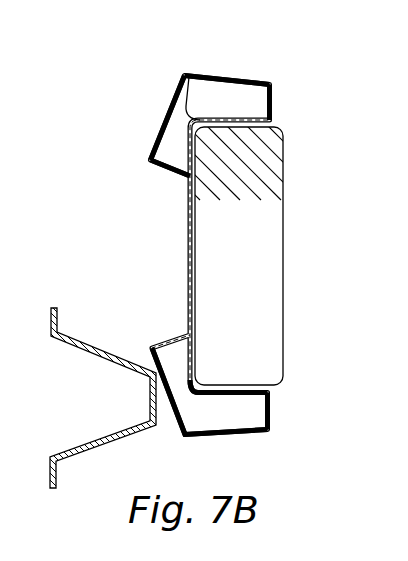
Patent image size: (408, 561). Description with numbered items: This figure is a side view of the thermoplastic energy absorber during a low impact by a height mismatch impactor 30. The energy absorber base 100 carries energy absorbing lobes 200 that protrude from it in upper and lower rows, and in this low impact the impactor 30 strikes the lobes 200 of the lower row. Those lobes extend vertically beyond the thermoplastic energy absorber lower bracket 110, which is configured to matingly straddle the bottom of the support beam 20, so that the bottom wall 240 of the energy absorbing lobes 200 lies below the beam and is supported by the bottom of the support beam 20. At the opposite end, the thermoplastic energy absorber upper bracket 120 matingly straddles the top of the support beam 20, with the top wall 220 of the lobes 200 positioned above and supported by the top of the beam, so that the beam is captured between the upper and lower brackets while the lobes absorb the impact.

The support beam 20 is at (257, 225).
The height mismatch impactor 30 is at (107, 362).
The thermoplastic energy absorber base 100 is at (187, 272).
The thermoplastic energy absorber lower bracket 110 is at (237, 391).
The thermoplastic energy absorber upper bracket 120 is at (188, 72).
The energy absorbing lobes 200 is at (273, 102).
The top wall 220 is at (225, 72).
The bottom wall 240 is at (167, 176).